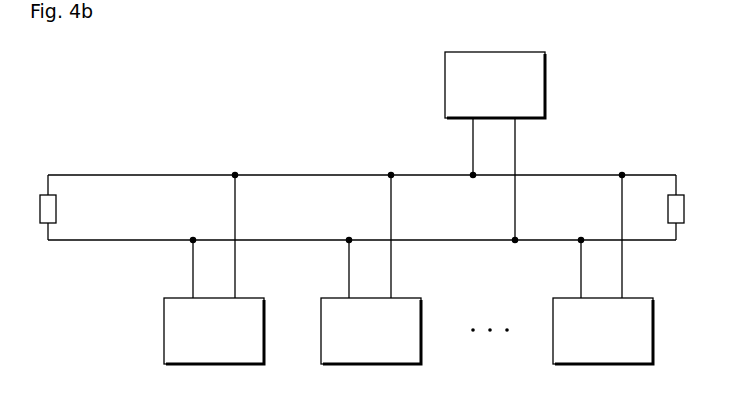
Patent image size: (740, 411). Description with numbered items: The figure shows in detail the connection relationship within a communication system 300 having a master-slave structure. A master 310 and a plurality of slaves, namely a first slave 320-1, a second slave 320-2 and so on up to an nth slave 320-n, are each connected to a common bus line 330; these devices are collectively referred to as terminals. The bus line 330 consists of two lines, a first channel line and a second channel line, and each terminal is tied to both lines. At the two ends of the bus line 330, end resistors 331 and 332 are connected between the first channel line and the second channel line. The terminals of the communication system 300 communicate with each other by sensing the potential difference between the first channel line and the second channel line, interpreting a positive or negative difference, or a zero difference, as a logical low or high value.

The communication system 300 is at (630, 75).
The master 310 is at (498, 51).
The first slave 320-1 is at (213, 366).
The second slave 320-2 is at (370, 366).
The nth slave 320-n is at (602, 366).
The bus line 330 is at (163, 240).
The end resistor 331 is at (40, 206).
The end resistor 332 is at (685, 206).